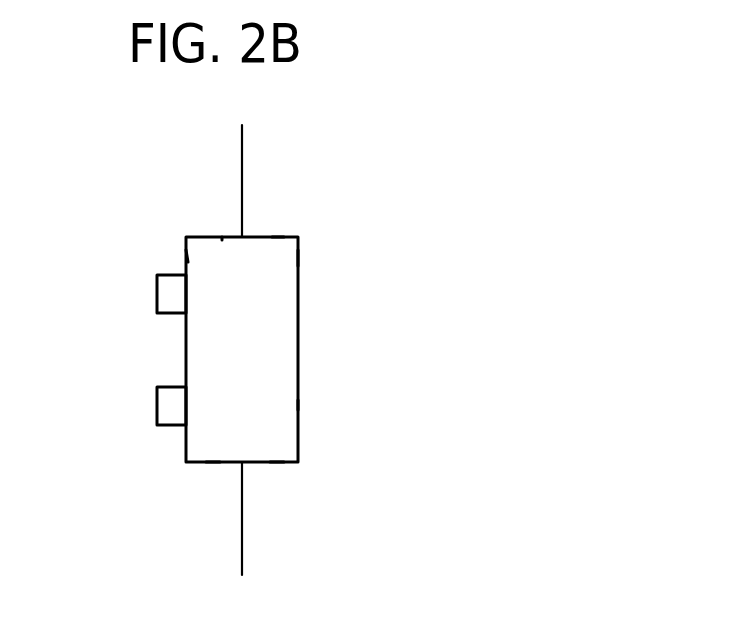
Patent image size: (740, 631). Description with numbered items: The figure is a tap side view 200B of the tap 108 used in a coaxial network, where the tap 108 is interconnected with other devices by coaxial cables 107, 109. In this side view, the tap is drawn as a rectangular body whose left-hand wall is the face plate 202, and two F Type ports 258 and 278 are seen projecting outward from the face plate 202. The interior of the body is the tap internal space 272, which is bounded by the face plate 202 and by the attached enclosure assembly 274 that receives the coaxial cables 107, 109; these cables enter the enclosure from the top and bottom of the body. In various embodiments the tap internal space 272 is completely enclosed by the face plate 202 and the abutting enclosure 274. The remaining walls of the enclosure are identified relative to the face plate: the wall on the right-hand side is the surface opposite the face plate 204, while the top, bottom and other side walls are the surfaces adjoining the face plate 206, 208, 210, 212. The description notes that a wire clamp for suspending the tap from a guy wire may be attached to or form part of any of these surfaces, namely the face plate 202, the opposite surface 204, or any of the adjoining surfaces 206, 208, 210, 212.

The tap side view 200B is at (470, 232).
The surface adjoining the face plate 210 is at (273, 372).
The tap 1 108 is at (307, 322).
The coaxial cable 107 is at (243, 205).
The coaxial cable 109 is at (248, 548).
The surface adjoining the face plate 212 is at (222, 236).
The face plate 202 is at (187, 258).
The surface adjoining the face plate 206 is at (278, 237).
The surface opposite the face plate 204 is at (303, 260).
The F Type port 258 is at (165, 315).
The F Type port 278 is at (167, 428).
The tap internal space 272 is at (260, 445).
The surface adjoining the face plate 208 is at (277, 458).
The enclosure assembly 274 is at (213, 462).